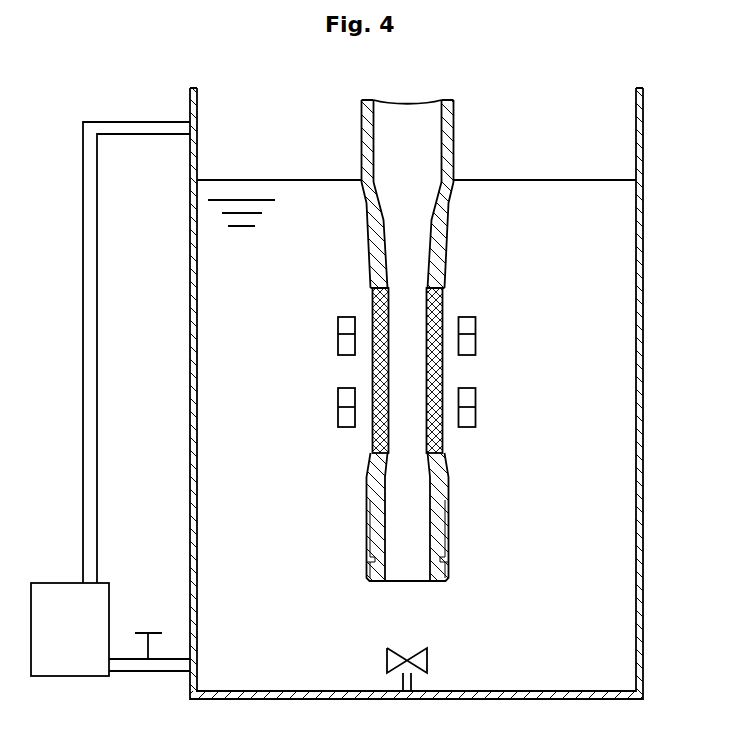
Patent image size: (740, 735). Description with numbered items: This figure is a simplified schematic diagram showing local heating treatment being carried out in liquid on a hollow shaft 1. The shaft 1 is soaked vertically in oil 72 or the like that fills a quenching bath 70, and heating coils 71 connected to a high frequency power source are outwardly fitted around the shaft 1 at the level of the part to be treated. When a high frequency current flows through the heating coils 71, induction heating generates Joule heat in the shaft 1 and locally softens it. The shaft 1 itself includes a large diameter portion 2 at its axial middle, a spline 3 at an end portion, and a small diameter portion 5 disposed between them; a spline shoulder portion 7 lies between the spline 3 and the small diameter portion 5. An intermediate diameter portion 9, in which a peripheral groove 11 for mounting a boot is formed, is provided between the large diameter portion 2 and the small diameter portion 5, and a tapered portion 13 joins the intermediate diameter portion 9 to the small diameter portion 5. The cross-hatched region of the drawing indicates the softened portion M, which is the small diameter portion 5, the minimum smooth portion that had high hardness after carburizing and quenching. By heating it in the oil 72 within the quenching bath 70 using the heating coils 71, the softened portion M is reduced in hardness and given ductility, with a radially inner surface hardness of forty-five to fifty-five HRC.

The hollow shaft 1 is at (457, 139).
The large diameter portion 2 is at (362, 139).
The spline 3 is at (447, 526).
The small diameter portion 5 is at (371, 369).
The spline shoulder portion 7 is at (370, 458).
The intermediate diameter portion 9 is at (446, 226).
The peripheral groove 11 is at (368, 245).
The tapered portion 13 is at (371, 280).
The softened portion M is at (443, 297).
The quenching bath 70 is at (646, 365).
The heating coils 71 is at (478, 340).
The oil 72 is at (609, 243).